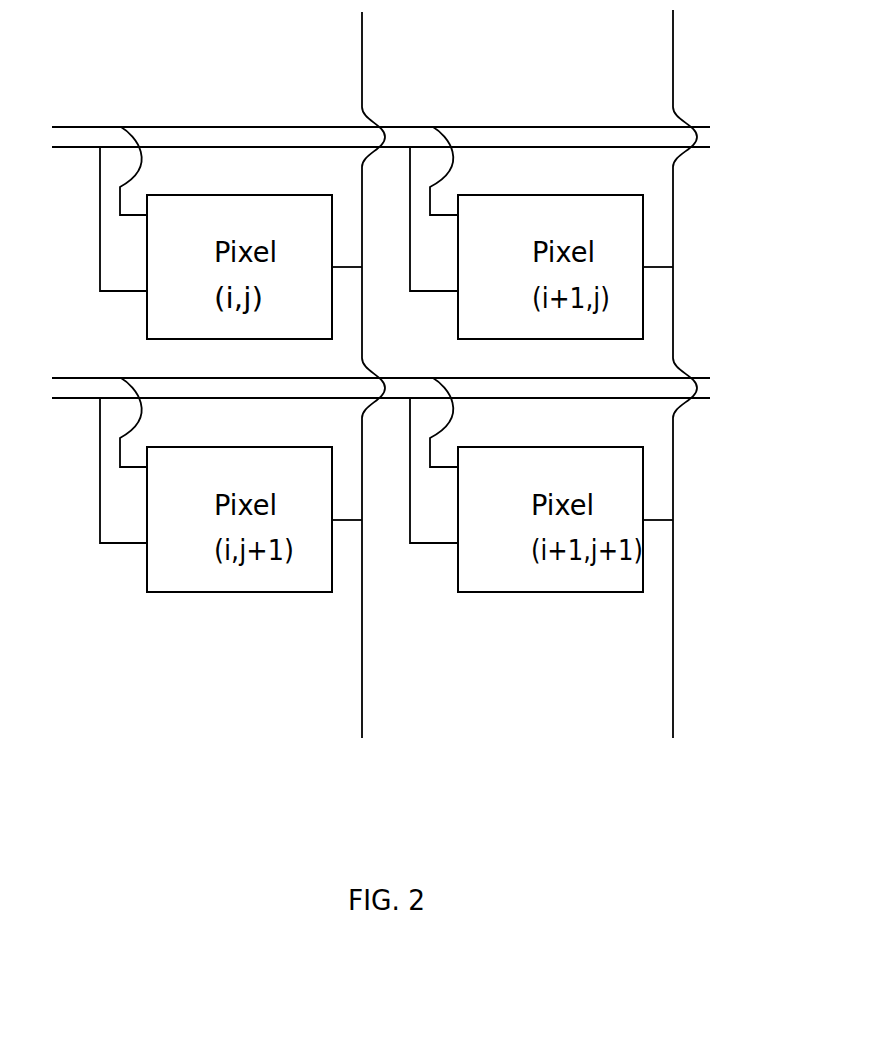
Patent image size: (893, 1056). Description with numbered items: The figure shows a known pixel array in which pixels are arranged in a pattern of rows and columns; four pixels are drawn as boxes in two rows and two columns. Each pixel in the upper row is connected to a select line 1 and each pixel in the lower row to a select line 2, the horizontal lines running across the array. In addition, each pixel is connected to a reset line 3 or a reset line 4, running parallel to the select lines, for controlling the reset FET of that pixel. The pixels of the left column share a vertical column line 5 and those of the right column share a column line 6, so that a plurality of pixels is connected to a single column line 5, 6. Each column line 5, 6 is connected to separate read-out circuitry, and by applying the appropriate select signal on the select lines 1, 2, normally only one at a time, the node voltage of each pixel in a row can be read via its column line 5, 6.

The select line 1 is at (82, 127).
The select line 2 is at (82, 378).
The reset line 3 is at (70, 147).
The reset line 4 is at (70, 398).
The column line 5 is at (362, 727).
The column line 6 is at (673, 727).